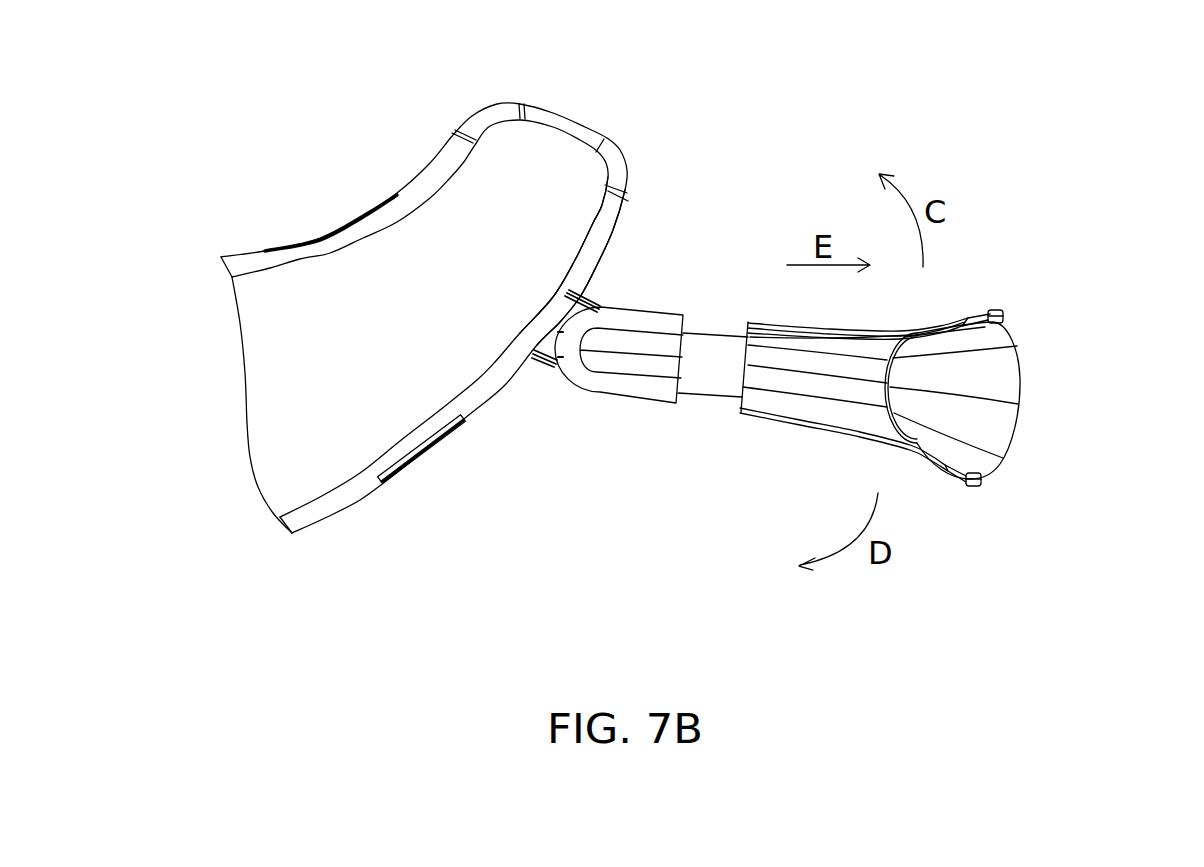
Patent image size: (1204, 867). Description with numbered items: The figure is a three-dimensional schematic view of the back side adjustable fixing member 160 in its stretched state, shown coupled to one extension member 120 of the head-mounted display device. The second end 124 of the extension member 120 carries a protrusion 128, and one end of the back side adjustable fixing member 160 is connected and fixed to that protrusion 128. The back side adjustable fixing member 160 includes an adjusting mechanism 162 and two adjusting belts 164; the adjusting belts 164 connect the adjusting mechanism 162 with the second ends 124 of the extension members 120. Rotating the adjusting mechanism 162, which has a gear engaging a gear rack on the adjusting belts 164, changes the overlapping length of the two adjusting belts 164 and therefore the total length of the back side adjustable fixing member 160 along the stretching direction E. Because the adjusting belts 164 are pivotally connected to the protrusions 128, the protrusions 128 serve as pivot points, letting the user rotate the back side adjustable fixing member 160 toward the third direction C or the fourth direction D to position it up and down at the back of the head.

The extension member 120 is at (360, 281).
The second end 124 is at (613, 232).
The protrusion 128 is at (548, 362).
The back side adjustable fixing member 160 is at (1124, 372).
The adjusting mechanism 162 is at (997, 312).
The adjusting belt 164 is at (873, 420).